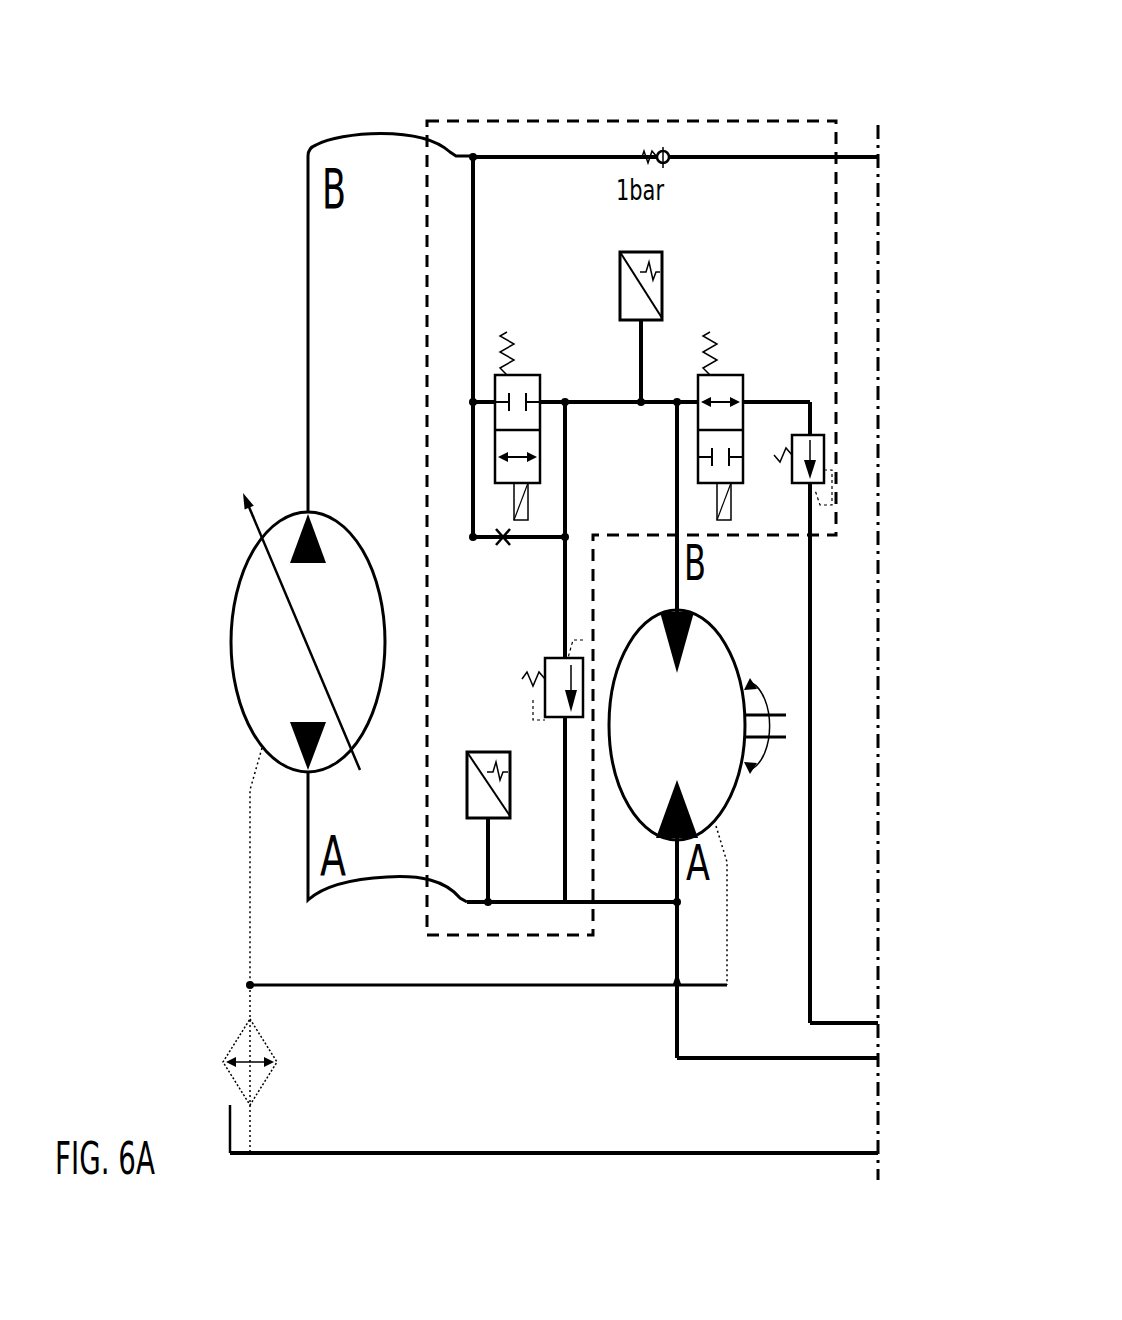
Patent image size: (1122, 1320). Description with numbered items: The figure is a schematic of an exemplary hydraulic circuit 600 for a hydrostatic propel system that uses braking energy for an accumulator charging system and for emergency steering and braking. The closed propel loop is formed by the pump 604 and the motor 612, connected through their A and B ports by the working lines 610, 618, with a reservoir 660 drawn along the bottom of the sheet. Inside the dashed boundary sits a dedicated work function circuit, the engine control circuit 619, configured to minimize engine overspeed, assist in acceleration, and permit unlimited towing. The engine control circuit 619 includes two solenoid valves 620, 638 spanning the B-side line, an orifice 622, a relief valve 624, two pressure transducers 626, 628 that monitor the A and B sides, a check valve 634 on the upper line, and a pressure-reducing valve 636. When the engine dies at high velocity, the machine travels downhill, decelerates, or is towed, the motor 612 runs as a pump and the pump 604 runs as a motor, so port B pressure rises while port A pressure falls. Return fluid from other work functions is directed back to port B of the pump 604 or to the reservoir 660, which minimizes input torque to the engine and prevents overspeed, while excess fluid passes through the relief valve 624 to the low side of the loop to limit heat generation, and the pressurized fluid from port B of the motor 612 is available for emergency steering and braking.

The hydraulic circuit 600 is at (525, 45).
The pump 604 is at (288, 498).
The first working line 610 is at (663, 450).
The motor 612 is at (641, 848).
The second working line 618 is at (656, 990).
The engine control circuit 619 is at (846, 302).
The solenoid valve 620 is at (527, 365).
The orifice 622 is at (499, 557).
The relief valve 624 is at (555, 731).
The pressure transducer 626 is at (474, 741).
The pressure transducer 628 is at (610, 271).
The check valve 634 is at (669, 140).
The pressure-reducing valve 636 is at (837, 439).
The solenoid valve 638 is at (741, 365).
The reservoir 660 is at (455, 1140).